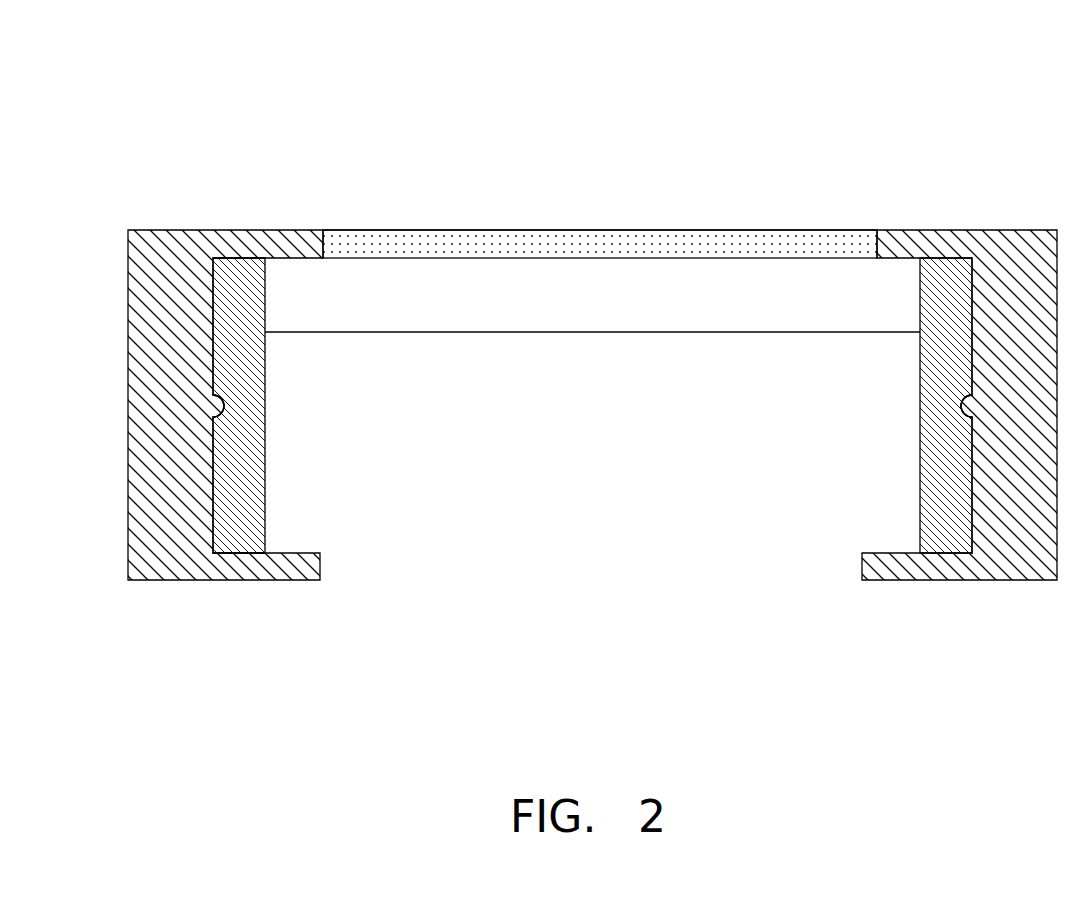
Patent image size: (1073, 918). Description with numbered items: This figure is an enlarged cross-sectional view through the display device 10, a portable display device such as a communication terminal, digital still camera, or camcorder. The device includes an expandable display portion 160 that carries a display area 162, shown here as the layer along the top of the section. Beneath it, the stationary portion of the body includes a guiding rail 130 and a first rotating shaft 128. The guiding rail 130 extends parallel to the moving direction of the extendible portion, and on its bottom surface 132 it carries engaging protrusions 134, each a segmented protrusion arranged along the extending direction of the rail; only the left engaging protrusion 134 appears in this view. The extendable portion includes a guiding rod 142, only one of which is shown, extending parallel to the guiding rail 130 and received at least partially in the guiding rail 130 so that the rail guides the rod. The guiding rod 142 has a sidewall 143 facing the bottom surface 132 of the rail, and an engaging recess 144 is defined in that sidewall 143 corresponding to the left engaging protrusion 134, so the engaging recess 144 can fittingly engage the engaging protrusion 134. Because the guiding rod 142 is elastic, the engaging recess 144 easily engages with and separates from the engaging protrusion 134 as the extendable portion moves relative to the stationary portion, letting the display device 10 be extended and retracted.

The display device 10 is at (623, 42).
The first rotating shaft 128 is at (357, 305).
The guiding rail 130 is at (900, 485).
The bottom surface 132 is at (213, 492).
The engaging protrusion 134 is at (222, 404).
The guiding rod 142 is at (228, 503).
The sidewall 143 is at (215, 316).
The engaging recess 144 is at (222, 398).
The expandable display portion 160 is at (651, 250).
The display area 162 is at (551, 230).